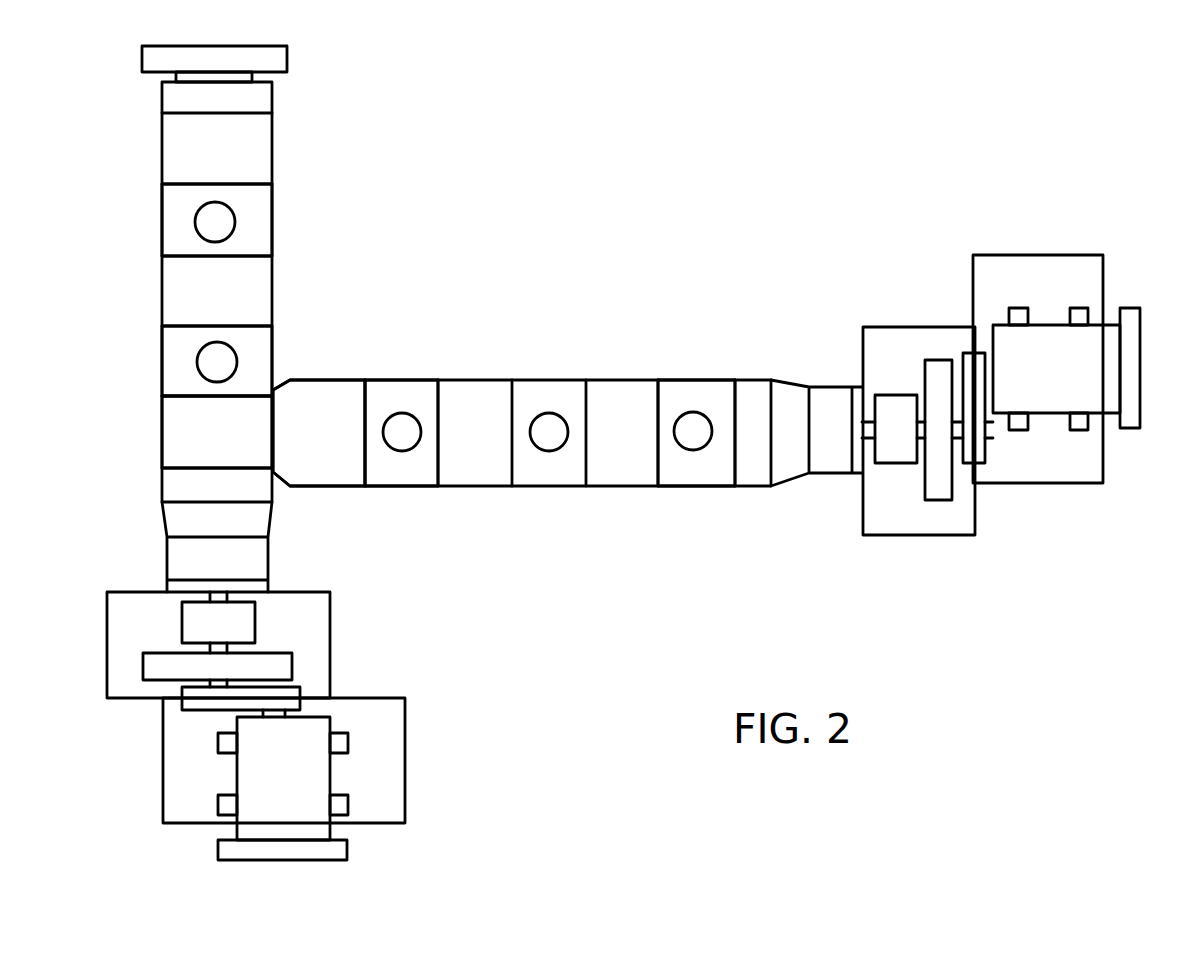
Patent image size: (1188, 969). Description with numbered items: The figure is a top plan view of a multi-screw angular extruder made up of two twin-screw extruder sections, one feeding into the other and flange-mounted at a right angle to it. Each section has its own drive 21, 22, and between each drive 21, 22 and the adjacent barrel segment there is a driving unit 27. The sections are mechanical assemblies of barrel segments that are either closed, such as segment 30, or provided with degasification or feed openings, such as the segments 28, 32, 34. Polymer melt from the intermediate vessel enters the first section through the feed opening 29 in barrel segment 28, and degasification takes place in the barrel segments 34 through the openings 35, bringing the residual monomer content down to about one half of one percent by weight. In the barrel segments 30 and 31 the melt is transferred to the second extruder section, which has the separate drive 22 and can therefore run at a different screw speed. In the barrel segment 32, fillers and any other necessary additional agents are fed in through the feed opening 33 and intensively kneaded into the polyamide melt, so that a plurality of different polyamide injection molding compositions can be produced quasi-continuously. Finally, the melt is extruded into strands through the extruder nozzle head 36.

The drive 21 is at (1032, 340).
The drive 22 is at (373, 772).
The driving unit 27 is at (939, 486).
The barrel segment 28 is at (693, 402).
The feed opening 29 is at (690, 440).
The barrel segment 30 is at (320, 406).
The barrel segment 31 is at (176, 443).
The barrel segment 32 is at (185, 343).
The feed opening 33 is at (207, 371).
The barrel segment 34 is at (180, 240).
The degasification opening 35 is at (210, 212).
The extruder nozzle head 36 is at (270, 63).